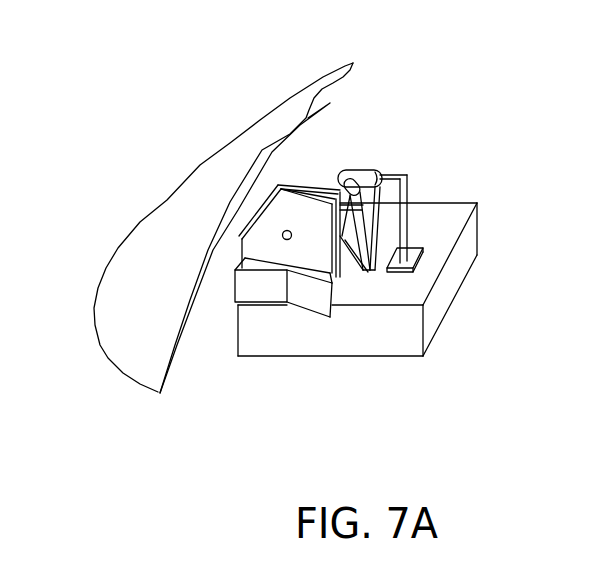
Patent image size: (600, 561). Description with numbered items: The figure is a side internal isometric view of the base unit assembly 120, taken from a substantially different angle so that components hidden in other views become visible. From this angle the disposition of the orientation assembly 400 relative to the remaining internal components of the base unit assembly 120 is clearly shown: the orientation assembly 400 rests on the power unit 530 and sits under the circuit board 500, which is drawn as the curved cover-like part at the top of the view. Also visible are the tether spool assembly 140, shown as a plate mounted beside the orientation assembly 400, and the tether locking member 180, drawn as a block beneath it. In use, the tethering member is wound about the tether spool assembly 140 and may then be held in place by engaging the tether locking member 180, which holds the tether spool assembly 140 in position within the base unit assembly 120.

The base unit assembly 120 is at (128, 159).
The circuit board 500 is at (340, 128).
The orientation assembly 400 is at (410, 173).
The tether spool assembly 140 is at (268, 243).
The tether locking member 180 is at (308, 297).
The power unit 530 is at (402, 347).